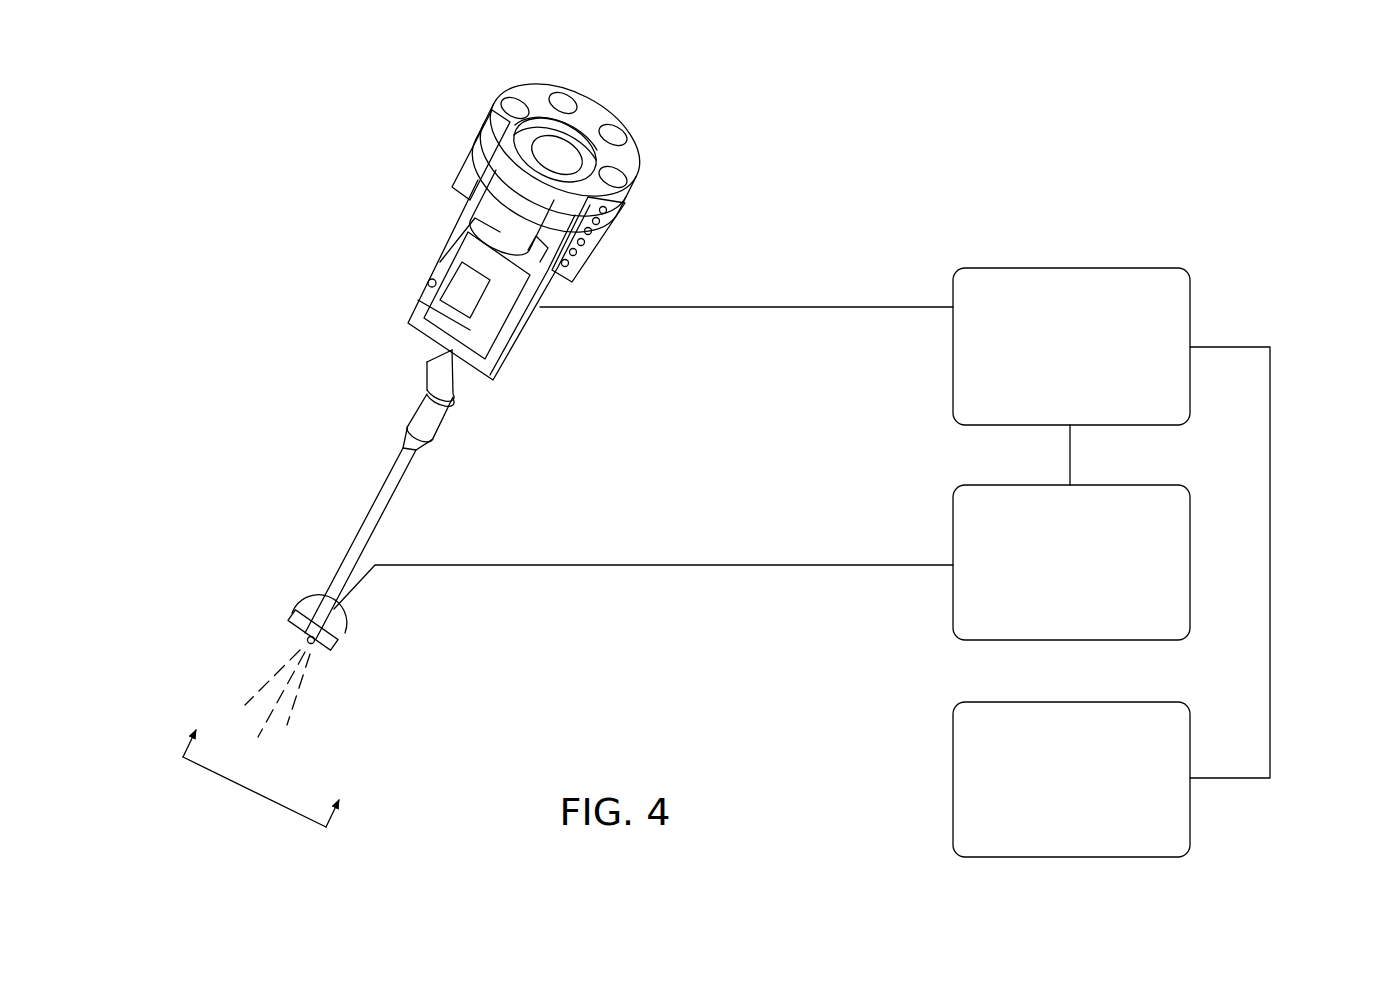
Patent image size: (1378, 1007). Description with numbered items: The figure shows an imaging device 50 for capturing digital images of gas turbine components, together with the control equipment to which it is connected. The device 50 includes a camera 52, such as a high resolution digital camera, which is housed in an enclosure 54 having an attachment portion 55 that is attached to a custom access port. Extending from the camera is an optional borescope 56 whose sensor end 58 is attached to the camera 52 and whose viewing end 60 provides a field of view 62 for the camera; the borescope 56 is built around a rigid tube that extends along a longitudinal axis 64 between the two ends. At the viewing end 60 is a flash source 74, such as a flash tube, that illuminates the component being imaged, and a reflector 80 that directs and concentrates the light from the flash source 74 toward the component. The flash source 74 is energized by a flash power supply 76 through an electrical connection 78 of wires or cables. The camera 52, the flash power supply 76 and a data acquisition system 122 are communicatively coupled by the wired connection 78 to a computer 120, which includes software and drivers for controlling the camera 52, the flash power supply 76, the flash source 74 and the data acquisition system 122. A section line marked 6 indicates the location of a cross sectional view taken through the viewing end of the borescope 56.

The imaging device 50 is at (858, 97).
The camera 52 is at (515, 357).
The enclosure 54 is at (493, 106).
The attachment portion 55 is at (427, 362).
The borescope 56 is at (380, 523).
The sensor end 58 is at (477, 378).
The viewing end 60 is at (327, 664).
The field of view 62 is at (247, 687).
The longitudinal axis 64 is at (262, 733).
The flash source 74 is at (292, 628).
The reflector 80 is at (312, 610).
The flash power supply 76 is at (953, 612).
The electrical connection 78 is at (833, 307).
The computer 120 is at (1133, 268).
The data acquisition system 122 is at (953, 817).
The section line 6- 6 is at (258, 782).